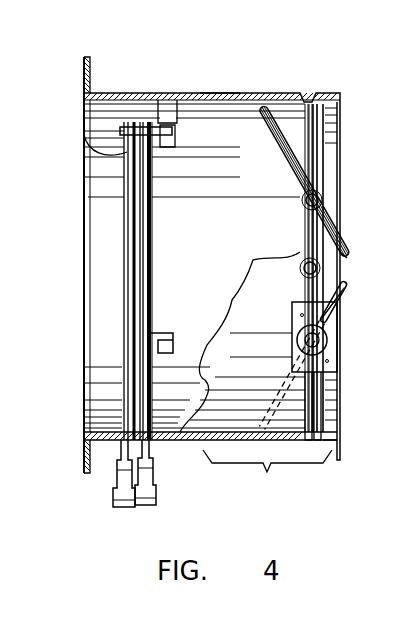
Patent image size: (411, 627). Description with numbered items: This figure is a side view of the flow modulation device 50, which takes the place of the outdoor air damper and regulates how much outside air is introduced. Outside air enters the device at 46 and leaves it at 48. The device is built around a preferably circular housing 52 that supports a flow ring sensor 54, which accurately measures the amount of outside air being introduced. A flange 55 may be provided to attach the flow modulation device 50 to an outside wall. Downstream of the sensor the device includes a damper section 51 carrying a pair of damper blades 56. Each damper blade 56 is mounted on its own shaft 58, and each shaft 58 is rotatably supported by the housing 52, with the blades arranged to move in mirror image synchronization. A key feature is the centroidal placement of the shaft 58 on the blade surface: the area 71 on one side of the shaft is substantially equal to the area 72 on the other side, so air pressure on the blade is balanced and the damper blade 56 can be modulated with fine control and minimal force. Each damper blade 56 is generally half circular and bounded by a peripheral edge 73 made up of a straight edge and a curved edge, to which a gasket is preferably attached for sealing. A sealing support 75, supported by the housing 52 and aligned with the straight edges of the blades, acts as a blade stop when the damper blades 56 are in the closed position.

The outside air entry 46 is at (60, 237).
The outside air exit 48 is at (391, 377).
The flow modulation device 50 is at (217, 57).
The damper section 51 is at (267, 478).
The housing 52 is at (248, 93).
The flow ring sensor 54 is at (84, 135).
The flange 55 is at (90, 78).
The damper blade 56 is at (326, 200).
The shaft 58 is at (300, 200).
The area 71 is at (347, 252).
The area 72 is at (278, 121).
The peripheral edge 73 is at (263, 100).
The sealing support 75 is at (300, 252).